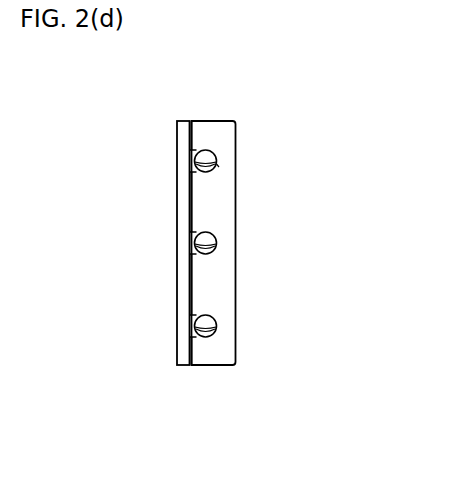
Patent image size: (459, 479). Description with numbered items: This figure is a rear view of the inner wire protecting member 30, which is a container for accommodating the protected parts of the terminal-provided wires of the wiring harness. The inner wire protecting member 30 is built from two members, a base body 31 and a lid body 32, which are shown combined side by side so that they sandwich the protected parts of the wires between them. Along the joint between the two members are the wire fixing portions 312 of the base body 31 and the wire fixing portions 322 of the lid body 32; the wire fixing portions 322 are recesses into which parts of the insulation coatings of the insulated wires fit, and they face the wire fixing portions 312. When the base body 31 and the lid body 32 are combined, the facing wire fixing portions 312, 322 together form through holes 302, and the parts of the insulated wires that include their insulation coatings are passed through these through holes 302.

The inner wire protecting member 30 is at (283, 82).
The base body 31 is at (220, 366).
The lid body 32 is at (180, 366).
The wire fixing portions 312 is at (190, 315).
The wire fixing portions 322 is at (212, 170).
The through holes 302 is at (219, 166).